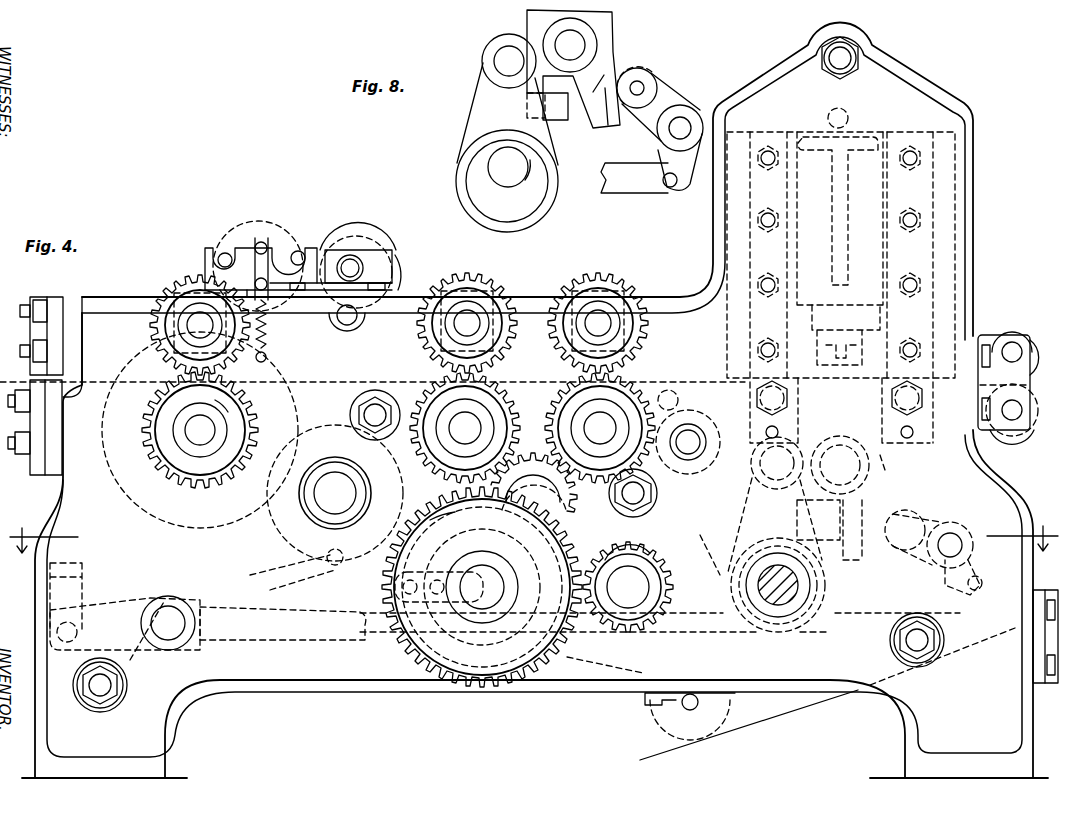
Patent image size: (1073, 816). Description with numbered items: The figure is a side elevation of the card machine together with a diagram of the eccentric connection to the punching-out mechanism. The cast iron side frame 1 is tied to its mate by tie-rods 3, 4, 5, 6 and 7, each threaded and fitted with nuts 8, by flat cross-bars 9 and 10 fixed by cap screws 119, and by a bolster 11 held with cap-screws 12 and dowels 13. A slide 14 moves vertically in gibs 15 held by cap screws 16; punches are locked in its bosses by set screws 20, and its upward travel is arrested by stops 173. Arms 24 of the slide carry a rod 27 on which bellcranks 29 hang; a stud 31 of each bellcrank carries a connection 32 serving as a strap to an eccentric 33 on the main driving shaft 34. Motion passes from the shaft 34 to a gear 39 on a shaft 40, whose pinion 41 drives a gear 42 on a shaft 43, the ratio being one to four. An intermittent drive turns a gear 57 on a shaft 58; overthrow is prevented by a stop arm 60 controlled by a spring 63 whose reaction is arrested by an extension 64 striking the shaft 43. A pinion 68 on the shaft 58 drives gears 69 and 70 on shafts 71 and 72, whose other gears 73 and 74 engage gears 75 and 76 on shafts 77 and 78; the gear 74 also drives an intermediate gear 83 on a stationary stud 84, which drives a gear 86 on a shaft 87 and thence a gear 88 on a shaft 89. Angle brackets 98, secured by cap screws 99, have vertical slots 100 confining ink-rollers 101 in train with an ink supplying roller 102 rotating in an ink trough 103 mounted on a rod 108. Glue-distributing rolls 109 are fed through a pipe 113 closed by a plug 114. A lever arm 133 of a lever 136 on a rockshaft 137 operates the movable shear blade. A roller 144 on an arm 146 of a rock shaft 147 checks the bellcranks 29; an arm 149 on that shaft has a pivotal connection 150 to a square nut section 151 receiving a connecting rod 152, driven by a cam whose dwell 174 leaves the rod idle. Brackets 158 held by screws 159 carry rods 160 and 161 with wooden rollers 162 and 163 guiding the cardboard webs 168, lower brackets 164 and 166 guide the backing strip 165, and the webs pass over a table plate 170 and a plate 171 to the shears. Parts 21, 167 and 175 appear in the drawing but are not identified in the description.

In FIG. 4, the side frame 1 is at (530, 400).
In FIG. 4, the tie-rod 3 is at (948, 622).
In FIG. 4, the tie-rod 4 is at (850, 55).
In FIG. 4, the tie-rod 5 is at (648, 494).
In FIG. 4, the tie-rod 6 is at (352, 405).
In FIG. 4, the tie-rod 7 is at (92, 690).
In FIG. 4, the nut 8 is at (363, 425).
In FIG. 4, the flat cross-bar 9 is at (72, 298).
In FIG. 4, the flat cross-bar 10 is at (38, 476).
In FIG. 4, the die-bed or bolster 11 is at (932, 450).
In FIG. 4, the cap-screw 12 is at (892, 398).
In FIG. 4, the dowel 13 is at (778, 430).
In FIG. 4, the slide 14 is at (839, 251).
In FIG. 4, the gib 15 is at (839, 254).
In FIG. 4, the cap screw 16 is at (912, 150).
In FIG. 4, the set screw 20 is at (22, 357).
In FIG. 4, the bolt 21 is at (22, 318).
In FIG. 8, the downwardly extending arm 24 is at (612, 30).
In FIG. 4, the downwardly extending arm 24 is at (882, 455).
In FIG. 8, the rod 27 is at (570, 45).
In FIG. 4, the rod 27 is at (840, 465).
In FIG. 8, the bellcrank 29 is at (604, 75).
In FIG. 4, the bellcrank 29 is at (866, 515).
In FIG. 8, the stud 31 is at (509, 61).
In FIG. 4, the stud 31 is at (777, 463).
In FIG. 8, the connection 32 is at (507, 114).
In FIG. 4, the connection 32 is at (775, 525).
In FIG. 8, the eccentric 33 is at (507, 181).
In FIG. 8, the main driving shaft 34 is at (509, 167).
In FIG. 4, the main driving shaft 34 is at (778, 600).
In FIG. 4, the gear 39 is at (708, 535).
In FIG. 4, the shaft 40 is at (628, 587).
In FIG. 4, the pinion 41 is at (652, 553).
In FIG. 4, the gear 42 is at (404, 652).
In FIG. 4, the shaft 43 is at (482, 587).
In FIG. 4, the gear 57 is at (278, 556).
In FIG. 4, the shaft 58 is at (335, 493).
In FIG. 4, the stop arm 60 is at (319, 567).
In FIG. 4, the spring 63 is at (135, 652).
In FIG. 4, the extension 64 is at (476, 617).
In FIG. 4, the pinion 68 is at (334, 493).
In FIG. 4, the gear 69 is at (140, 514).
In FIG. 4, the gear 70 is at (392, 355).
In FIG. 4, the shaft 71 is at (200, 430).
In FIG. 4, the shaft 72 is at (465, 428).
In FIG. 4, the gear 73 is at (158, 470).
In FIG. 4, the gear 74 is at (448, 474).
In FIG. 4, the gear 75 is at (148, 328).
In FIG. 4, the gear 76 is at (416, 325).
In FIG. 4, the shaft 77 is at (200, 325).
In FIG. 4, the shaft 78 is at (467, 323).
In FIG. 4, the intermediate gear 83 is at (578, 516).
In FIG. 4, the stationary stud 84 is at (534, 492).
In FIG. 4, the gear 86 is at (598, 464).
In FIG. 4, the shaft 87 is at (600, 428).
In FIG. 4, the gear 88 is at (650, 326).
In FIG. 4, the shaft 89 is at (598, 323).
In FIG. 4, the angle bracket 98 is at (206, 250).
In FIG. 4, the cap screw 99 is at (292, 292).
In FIG. 4, the vertical slot 100 is at (252, 240).
In FIG. 4, the ink-roller 101 is at (218, 253).
In FIG. 4, the ink supplying roller 102 is at (352, 255).
In FIG. 4, the ink trough 103 is at (394, 252).
In FIG. 4, the rod 108 is at (346, 326).
In FIG. 4, the glue-distributing roll 109 is at (704, 382).
In FIG. 4, the pipe 113 is at (695, 428).
In FIG. 4, the plug 114 is at (700, 452).
In FIG. 4, the cap screw 119 is at (42, 300).
In FIG. 4, the lever arm 133 is at (125, 624).
In FIG. 4, the lever 136 is at (283, 623).
In FIG. 4, the rockshaft 137 is at (168, 623).
In FIG. 8, the roller 144 is at (650, 77).
In FIG. 4, the roller 144 is at (895, 520).
In FIG. 8, the arm 146 is at (660, 97).
In FIG. 8, the rock shaft 147 is at (680, 128).
In FIG. 4, the rock shaft 147 is at (950, 545).
In FIG. 8, the arm 149 is at (660, 150).
In FIG. 4, the arm 149 is at (975, 562).
In FIG. 8, the pivotal connection 150 is at (666, 186).
In FIG. 8, the square nut section 151 is at (634, 178).
In FIG. 4, the connecting rod 152 is at (733, 632).
In FIG. 4, the bracket 158 is at (688, 378).
In FIG. 4, the screw 159 is at (990, 338).
In FIG. 4, the rod 160 is at (1014, 343).
In FIG. 4, the rod 161 is at (1010, 420).
In FIG. 4, the wooden roller 162 is at (1032, 345).
In FIG. 4, the wooden roller 163 is at (1022, 435).
In FIG. 4, the bracket 164 is at (1033, 620).
In FIG. 4, the web 165 is at (990, 652).
In FIG. 4, the bracket 166 is at (642, 698).
In FIG. 4, the guard 167 is at (660, 728).
In FIG. 4, the cardboard web 168 is at (1033, 382).
In FIG. 4, the table plate 170 is at (330, 362).
In FIG. 4, the plate 171 is at (122, 365).
In FIG. 4, the stop 173 is at (848, 116).
In FIG. 4, the dwell 174 is at (450, 570).
In FIG. 8, the block 175 is at (558, 115).
In FIG. 4, the block 175 is at (828, 519).